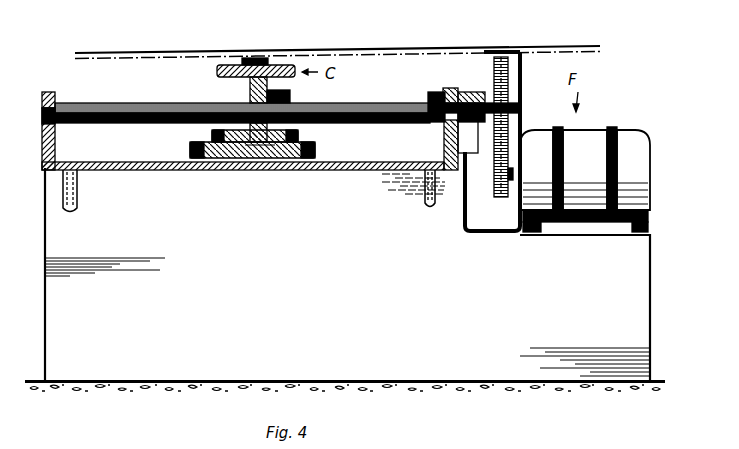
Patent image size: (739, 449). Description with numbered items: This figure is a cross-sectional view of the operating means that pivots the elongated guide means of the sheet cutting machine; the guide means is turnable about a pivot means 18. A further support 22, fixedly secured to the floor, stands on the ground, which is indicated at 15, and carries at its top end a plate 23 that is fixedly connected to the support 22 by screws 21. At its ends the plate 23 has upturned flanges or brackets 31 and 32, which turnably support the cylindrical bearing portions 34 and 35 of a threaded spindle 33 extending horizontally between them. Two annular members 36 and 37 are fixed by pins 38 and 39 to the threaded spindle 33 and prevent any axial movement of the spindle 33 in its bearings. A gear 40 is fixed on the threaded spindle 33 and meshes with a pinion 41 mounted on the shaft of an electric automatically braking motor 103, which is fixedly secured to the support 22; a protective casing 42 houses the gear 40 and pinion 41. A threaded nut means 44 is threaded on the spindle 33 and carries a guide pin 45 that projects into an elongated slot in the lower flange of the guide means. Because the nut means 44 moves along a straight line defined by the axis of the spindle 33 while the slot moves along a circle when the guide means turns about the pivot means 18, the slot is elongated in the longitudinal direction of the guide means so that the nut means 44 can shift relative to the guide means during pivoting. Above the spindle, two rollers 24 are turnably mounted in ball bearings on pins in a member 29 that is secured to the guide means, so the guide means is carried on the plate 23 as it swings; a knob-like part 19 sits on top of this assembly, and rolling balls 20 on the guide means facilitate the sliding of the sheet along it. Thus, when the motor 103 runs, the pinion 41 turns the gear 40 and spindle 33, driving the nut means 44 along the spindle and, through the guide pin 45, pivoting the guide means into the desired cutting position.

The ground 15 is at (439, 384).
The pivot means 18 is at (250, 87).
The knob plate 19 is at (240, 62).
The rolling balls 20 is at (262, 58).
The screws 21 is at (426, 205).
The support 22 is at (47, 320).
The plate 23 is at (338, 170).
The rollers 24 is at (208, 170).
The member 29 is at (305, 147).
The upturned flange 31 is at (56, 150).
The upturned flange 32 is at (444, 140).
The threaded spindle 33 is at (127, 103).
The cylindrical bearing portion 34 is at (42, 112).
The cylindrical bearing portion 35 is at (449, 90).
The annular member 36 is at (436, 92).
The annular member 37 is at (493, 62).
The pin 38 is at (428, 94).
The pin 39 is at (475, 153).
The gear 40 is at (518, 75).
The pinion 41 is at (501, 197).
The protective casing 42 is at (522, 118).
The threaded nut means 44 is at (290, 98).
The guide pin 45 is at (272, 170).
The motor 103 is at (582, 128).